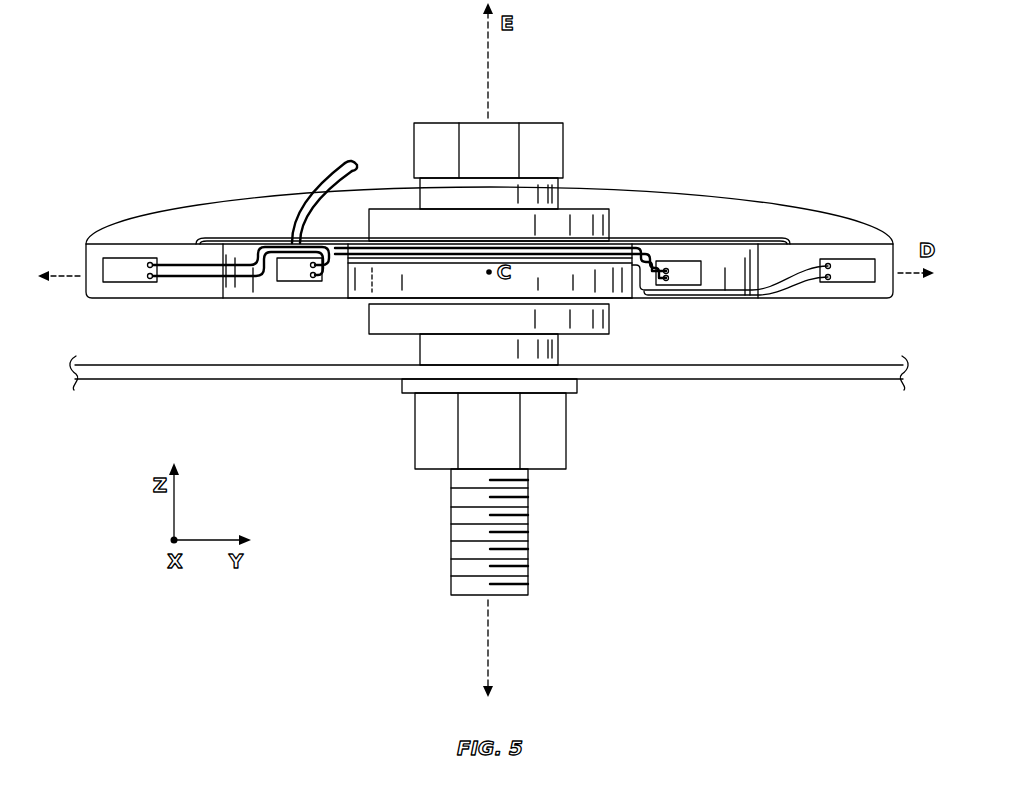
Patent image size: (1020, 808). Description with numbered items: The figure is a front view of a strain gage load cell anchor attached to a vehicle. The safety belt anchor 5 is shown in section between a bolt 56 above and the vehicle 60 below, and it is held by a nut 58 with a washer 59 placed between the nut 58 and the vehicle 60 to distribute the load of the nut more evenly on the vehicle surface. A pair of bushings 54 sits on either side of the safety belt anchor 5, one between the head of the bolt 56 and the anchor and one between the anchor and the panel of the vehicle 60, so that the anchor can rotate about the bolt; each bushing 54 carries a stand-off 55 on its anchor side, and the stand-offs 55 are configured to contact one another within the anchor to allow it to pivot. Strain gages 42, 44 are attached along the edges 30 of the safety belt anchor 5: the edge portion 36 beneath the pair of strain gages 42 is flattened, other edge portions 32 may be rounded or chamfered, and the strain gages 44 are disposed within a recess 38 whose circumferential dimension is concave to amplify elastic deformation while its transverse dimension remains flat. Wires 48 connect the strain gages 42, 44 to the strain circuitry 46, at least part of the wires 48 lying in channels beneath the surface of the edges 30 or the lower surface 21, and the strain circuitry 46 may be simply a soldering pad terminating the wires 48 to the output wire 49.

The safety belt anchor 5 is at (758, 192).
The lower surface 21 is at (629, 307).
The edges 30 is at (414, 289).
The edge portion 32 is at (360, 290).
The edge portion 36 is at (110, 294).
The recess 38 is at (322, 292).
The strain gages 42 is at (141, 276).
The strain gages 44 is at (292, 278).
The strain circuitry 46 is at (278, 240).
The wires 48 is at (270, 248).
The output wire 49 is at (307, 205).
The bushings 54 is at (585, 213).
The stand-off 55 is at (523, 297).
The bolt 56 is at (536, 137).
The nut 58 is at (558, 437).
The washer 59 is at (492, 380).
The vehicle 60 is at (832, 373).